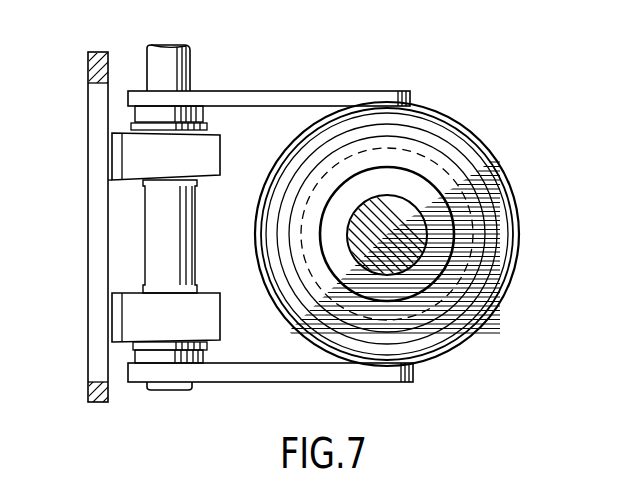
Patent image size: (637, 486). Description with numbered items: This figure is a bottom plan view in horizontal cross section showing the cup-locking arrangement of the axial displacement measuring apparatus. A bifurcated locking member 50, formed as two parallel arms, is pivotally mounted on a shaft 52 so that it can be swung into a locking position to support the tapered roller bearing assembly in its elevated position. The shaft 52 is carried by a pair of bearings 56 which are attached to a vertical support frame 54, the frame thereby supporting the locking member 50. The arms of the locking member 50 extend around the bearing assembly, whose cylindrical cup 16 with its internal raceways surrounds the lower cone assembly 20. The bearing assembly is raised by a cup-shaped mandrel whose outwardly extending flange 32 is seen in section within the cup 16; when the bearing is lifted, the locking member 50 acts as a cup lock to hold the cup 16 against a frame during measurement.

The cylindrical cup 16 is at (522, 259).
The lower cone assembly 20 is at (487, 213).
The flange 32 is at (448, 180).
The bifurcated locking member 50 is at (278, 92).
The shaft 52 is at (188, 53).
The vertical support frame 54 is at (88, 63).
The bearings 56 is at (212, 150).